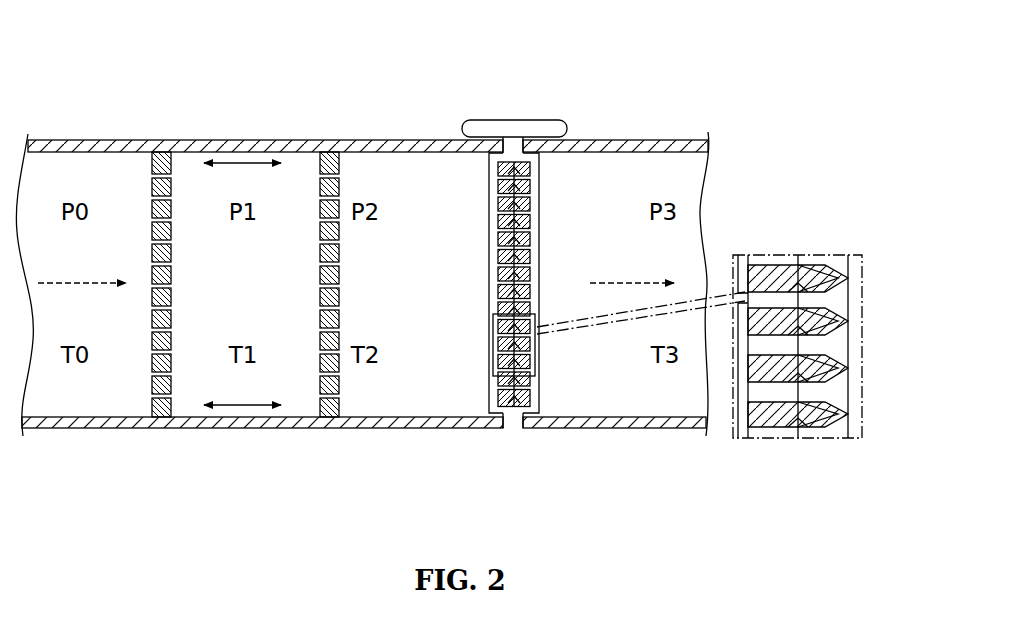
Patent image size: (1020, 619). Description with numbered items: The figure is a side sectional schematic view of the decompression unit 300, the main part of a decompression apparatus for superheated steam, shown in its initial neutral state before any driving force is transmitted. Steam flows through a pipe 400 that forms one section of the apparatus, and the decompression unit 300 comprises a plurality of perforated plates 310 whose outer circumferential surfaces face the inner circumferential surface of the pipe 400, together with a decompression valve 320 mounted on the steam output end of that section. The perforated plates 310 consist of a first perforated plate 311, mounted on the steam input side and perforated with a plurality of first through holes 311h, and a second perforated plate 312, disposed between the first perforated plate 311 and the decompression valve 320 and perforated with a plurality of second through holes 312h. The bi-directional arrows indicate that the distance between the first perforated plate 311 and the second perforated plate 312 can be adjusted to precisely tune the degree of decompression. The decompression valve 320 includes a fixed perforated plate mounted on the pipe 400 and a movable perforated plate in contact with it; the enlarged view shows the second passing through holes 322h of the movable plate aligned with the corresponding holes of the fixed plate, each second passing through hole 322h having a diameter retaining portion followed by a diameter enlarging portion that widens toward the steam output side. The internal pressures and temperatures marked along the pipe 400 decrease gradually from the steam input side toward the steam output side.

The pipe 400 is at (94, 140).
The decompression unit 300 is at (280, 60).
The perforated plates 310 is at (215, 47).
The first perforated plate 311 is at (167, 152).
The first through holes 311h is at (160, 178).
The second perforated plate 312 is at (325, 140).
The second through holes 312h is at (314, 196).
The decompression valve 320 is at (495, 120).
The second passing through holes 322h is at (475, 466).